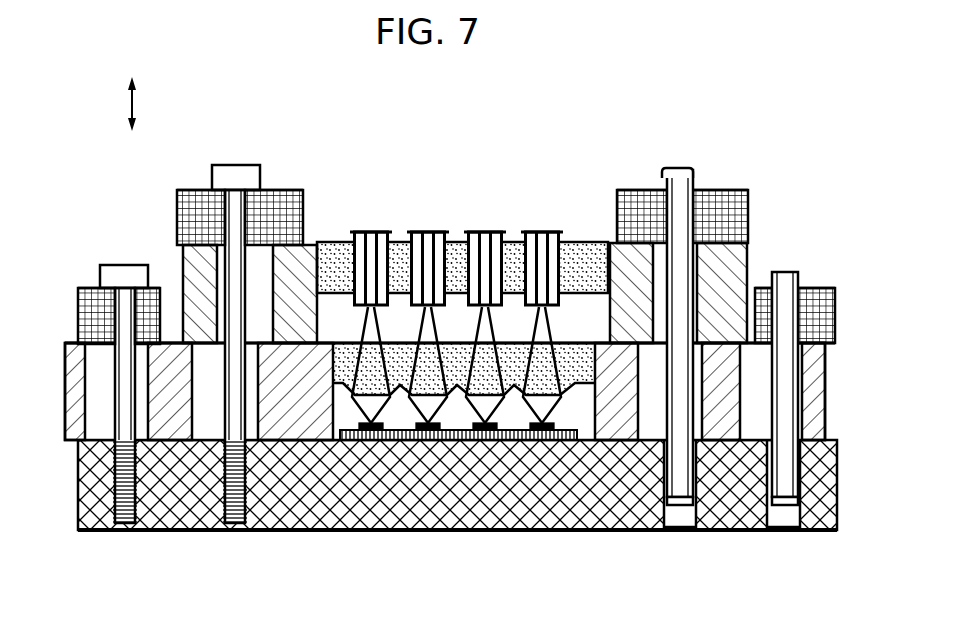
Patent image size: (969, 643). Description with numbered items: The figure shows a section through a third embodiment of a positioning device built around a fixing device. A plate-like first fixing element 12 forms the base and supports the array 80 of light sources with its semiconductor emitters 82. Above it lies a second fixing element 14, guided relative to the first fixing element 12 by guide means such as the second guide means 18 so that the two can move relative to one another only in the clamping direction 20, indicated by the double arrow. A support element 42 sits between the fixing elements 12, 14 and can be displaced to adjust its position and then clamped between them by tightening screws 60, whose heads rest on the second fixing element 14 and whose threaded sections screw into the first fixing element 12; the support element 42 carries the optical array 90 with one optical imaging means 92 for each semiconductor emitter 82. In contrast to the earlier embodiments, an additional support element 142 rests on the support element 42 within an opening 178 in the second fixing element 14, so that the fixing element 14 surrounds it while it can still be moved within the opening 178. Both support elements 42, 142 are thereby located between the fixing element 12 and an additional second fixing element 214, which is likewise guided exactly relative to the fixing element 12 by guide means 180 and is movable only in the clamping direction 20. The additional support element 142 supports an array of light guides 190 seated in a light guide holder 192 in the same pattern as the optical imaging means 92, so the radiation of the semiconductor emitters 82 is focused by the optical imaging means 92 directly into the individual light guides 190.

The first fixing element 12 is at (813, 518).
The second fixing element 14 is at (818, 323).
The second guide means 18 is at (803, 400).
The clamping direction 20 is at (136, 104).
The support element 42 is at (77, 400).
The tightening screw 60 is at (114, 416).
The array of light sources 80 is at (478, 441).
The semiconductor emitter 82 is at (533, 443).
The optical array 90 is at (400, 443).
The optical imaging means 92 is at (335, 443).
The additional support element 142 is at (728, 283).
The opening 178 is at (168, 297).
The guide means 180 is at (678, 207).
The light guides 190 is at (530, 242).
The light guide holder 192 is at (580, 267).
The additional second fixing element 214 is at (728, 218).